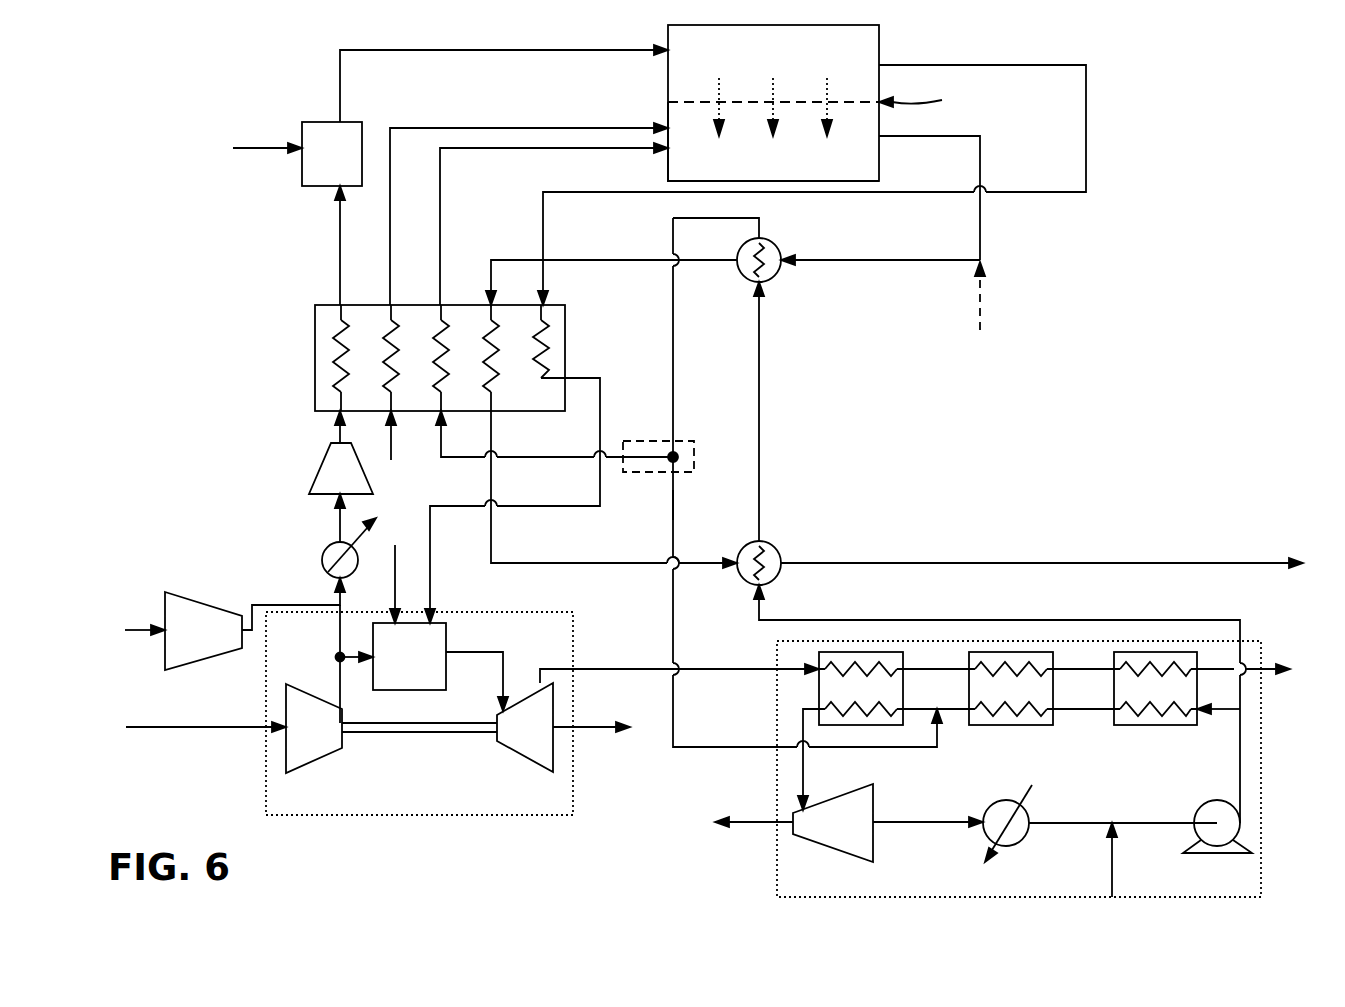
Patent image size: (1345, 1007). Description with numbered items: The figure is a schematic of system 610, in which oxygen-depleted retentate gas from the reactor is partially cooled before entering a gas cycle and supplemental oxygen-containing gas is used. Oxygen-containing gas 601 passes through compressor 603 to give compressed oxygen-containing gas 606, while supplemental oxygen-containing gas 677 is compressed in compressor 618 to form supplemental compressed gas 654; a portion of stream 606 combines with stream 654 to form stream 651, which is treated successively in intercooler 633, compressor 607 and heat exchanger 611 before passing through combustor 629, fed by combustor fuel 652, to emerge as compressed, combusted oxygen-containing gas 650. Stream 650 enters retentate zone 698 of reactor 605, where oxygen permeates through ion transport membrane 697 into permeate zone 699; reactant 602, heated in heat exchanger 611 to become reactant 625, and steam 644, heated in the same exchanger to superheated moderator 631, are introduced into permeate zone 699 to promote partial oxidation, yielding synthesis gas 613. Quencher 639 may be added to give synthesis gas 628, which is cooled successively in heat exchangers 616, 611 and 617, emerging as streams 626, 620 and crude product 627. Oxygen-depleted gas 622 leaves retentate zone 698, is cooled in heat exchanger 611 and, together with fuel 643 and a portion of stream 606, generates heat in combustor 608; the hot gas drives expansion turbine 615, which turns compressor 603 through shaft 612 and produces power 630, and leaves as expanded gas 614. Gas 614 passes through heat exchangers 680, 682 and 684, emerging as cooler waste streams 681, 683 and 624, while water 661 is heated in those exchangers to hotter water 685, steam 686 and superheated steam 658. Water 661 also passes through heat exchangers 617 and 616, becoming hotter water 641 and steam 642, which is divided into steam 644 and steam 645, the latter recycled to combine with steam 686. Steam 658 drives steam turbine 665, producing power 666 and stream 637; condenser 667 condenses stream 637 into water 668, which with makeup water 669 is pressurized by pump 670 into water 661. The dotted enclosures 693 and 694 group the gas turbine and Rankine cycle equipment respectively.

The oxygen-containing gas 601 is at (196, 727).
The reactant 602 is at (392, 450).
The compressor 603 is at (326, 738).
The reactor 605 is at (930, 98).
The compressed oxygen-containing gas 606 is at (342, 684).
The compressor 607 is at (357, 481).
The combustor 608 is at (427, 666).
The system 610 is at (1097, 344).
The heat exchanger 611 is at (315, 343).
The shaft 612 is at (408, 733).
The synthesis gas stream 613 is at (980, 158).
The expanded oxygen-containing gas 614 is at (602, 668).
The expansion turbine 615 is at (543, 738).
The heat exchanger 616 is at (774, 280).
The heat exchanger 617 is at (743, 552).
The compressor 618 is at (216, 641).
The synthesis gas stream 620 is at (576, 563).
The oxygen-depleted gas stream 622 is at (1086, 124).
The waste stream 624 is at (1262, 661).
The reactant 625 is at (545, 128).
The synthesis gas stream 626 is at (610, 260).
The crude synthesis gas product 627 is at (1082, 563).
The synthesis gas 628 is at (873, 260).
The combustor 629 is at (302, 178).
The power 630 is at (582, 726).
The steam 631 is at (440, 166).
The intercooler 633 is at (327, 549).
The stream 637 is at (896, 822).
The quencher 639 is at (982, 325).
The water stream 641 is at (759, 420).
The steam 642 is at (673, 383).
The fuel 643 is at (398, 593).
The steam 644 is at (542, 457).
The steam 645 is at (673, 503).
The compressed, combusted oxygen-containing gas 650 is at (572, 50).
The compressed oxygen-containing gas stream 651 is at (513, 506).
The combustor fuel 652 is at (256, 148).
The supplemental compressed oxygen-containing gas 654 is at (262, 605).
The superheated steam 658 is at (803, 724).
The water 661 is at (916, 620).
The steam turbine 665 is at (850, 833).
The power 666 is at (754, 810).
The condenser 667 is at (1017, 846).
The water 668 is at (1048, 823).
The makeup water 669 is at (1114, 870).
The pump 670 is at (1215, 853).
The supplemental oxygen-containing gas 677 is at (145, 630).
The heat exchanger 680 is at (878, 699).
The waste stream 681 is at (912, 669).
The heat exchanger 682 is at (1028, 699).
The waste stream 683 is at (1062, 669).
The heat exchanger 684 is at (1172, 696).
The water stream 685 is at (1062, 709).
The steam 686 is at (912, 709).
The gas turbine unit 693 is at (362, 815).
The bottoming cycle unit 694 is at (909, 897).
The ion transport membrane 697 is at (788, 102).
The retentate zone 698 is at (732, 56).
The permeate zone 699 is at (726, 175).